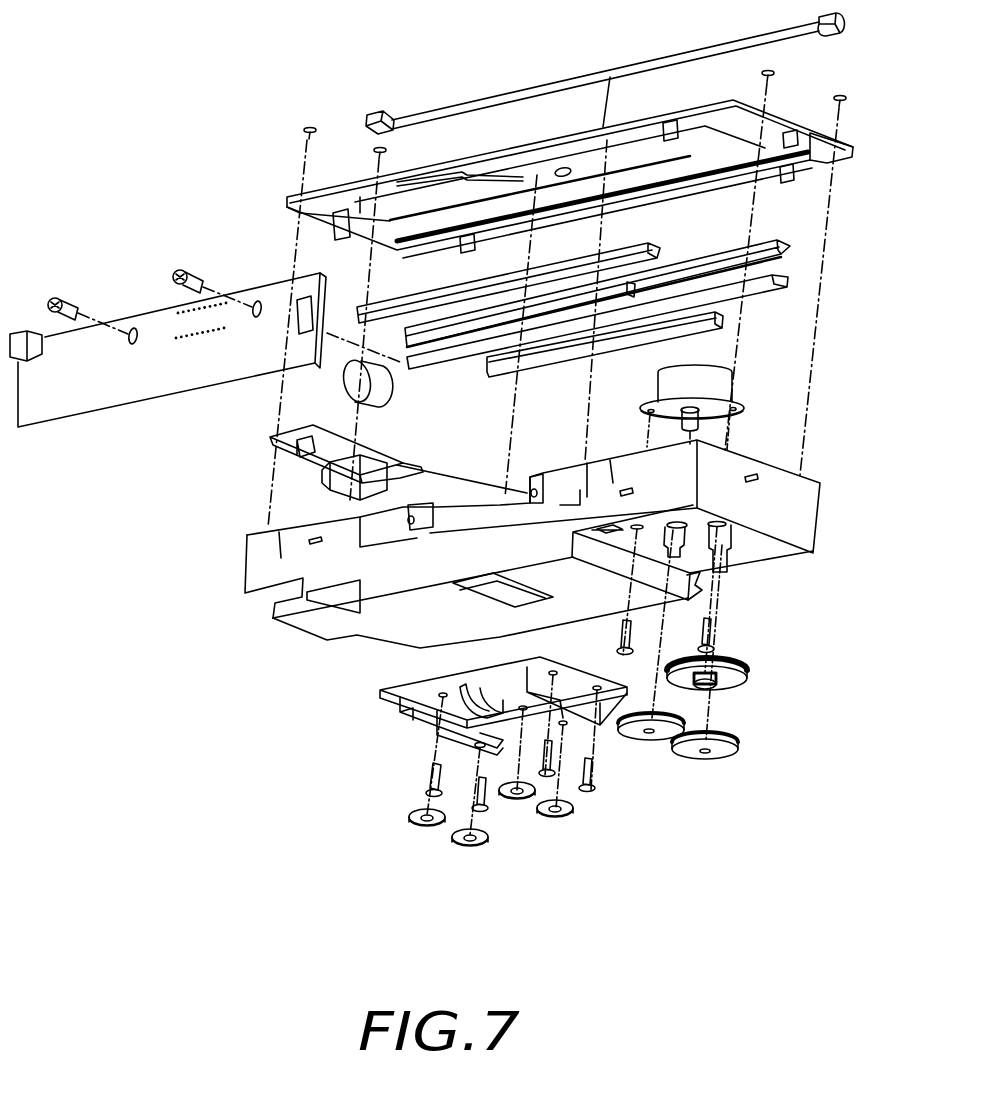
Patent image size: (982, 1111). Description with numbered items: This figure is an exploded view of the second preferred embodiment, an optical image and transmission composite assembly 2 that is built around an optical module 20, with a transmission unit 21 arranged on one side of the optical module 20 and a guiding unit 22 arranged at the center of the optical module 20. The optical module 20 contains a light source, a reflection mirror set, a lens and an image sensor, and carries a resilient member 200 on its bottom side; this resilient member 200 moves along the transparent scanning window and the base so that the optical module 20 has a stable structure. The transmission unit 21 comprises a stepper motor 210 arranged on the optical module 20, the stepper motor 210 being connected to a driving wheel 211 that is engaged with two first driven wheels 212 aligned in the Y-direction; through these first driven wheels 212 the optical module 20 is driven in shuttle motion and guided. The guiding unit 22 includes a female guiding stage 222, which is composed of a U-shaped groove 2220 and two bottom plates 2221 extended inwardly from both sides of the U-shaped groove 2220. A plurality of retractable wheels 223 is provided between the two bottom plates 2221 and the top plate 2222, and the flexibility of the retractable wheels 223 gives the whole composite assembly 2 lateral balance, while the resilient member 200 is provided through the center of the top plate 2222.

The optical image and transmission composite assembly 2 is at (440, 500).
The optical module 20 is at (250, 567).
The transmission unit 21 is at (717, 703).
The guiding unit 22 is at (433, 815).
The resilient member 200 is at (482, 708).
The stepper motor 210 is at (720, 388).
The driving wheel 211 is at (733, 680).
The first driven wheels 212 is at (678, 777).
The female guiding stage 222 is at (433, 711).
The retractable wheels 223 is at (430, 826).
The U-shaped groove 2220 is at (410, 708).
The bottom plates 2221 is at (422, 726).
The top plate 2222 is at (420, 685).